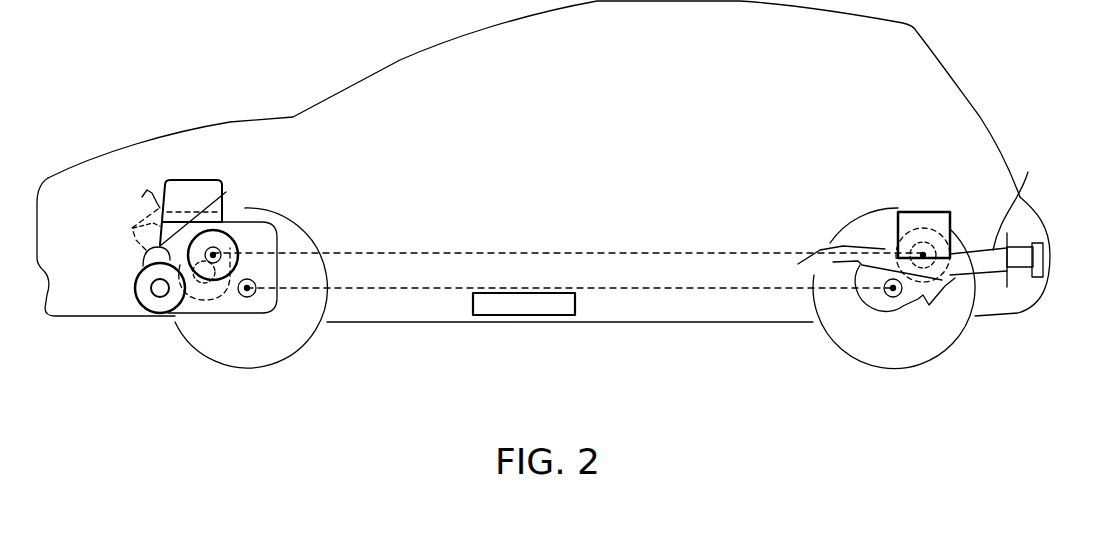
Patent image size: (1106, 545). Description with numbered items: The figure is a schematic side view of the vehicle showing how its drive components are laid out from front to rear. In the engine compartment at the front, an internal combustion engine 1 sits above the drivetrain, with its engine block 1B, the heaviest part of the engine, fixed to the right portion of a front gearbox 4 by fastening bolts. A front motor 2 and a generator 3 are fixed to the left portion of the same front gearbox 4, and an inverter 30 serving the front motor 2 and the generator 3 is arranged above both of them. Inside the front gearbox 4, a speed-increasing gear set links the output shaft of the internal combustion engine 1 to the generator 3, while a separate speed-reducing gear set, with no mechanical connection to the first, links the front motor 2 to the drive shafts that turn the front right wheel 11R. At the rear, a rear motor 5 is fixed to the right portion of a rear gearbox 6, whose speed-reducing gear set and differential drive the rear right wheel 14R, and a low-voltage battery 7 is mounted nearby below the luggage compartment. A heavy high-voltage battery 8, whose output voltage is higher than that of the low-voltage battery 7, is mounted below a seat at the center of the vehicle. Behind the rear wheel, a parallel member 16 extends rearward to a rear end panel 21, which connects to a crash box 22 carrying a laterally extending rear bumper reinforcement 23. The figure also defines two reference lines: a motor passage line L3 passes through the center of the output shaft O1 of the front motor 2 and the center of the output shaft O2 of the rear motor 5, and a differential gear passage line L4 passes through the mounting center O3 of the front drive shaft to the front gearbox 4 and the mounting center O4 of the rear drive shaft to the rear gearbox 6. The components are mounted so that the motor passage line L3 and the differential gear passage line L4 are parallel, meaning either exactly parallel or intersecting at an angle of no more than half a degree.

The internal combustion engine 1 is at (165, 207).
The engine block 1B is at (142, 228).
The front motor 2 is at (237, 245).
The generator 3 is at (157, 318).
The front gearbox 4 is at (225, 307).
The rear motor 5 is at (965, 282).
The rear gearbox 6 is at (903, 300).
The low-voltage battery 7 is at (937, 212).
The high-voltage battery 8 is at (520, 307).
The front right wheel 11R is at (300, 328).
The rear right wheel 14R is at (843, 327).
The parallel member 16 is at (1017, 200).
The rear end panel 21 is at (1008, 283).
The crash box 22 is at (1015, 257).
The rear bumper reinforcement 23 is at (1043, 260).
The inverter 30 is at (142, 198).
The center of the output shaft of the front motor O1 is at (209, 248).
The center of the output shaft of the rear motor O2 is at (919, 245).
The mounting center of the drive shaft to the front gearbox O3 is at (249, 298).
The mounting center of the drive shaft to the rear gearbox O4 is at (891, 299).
The motor passage line L3 is at (525, 253).
The differential gear passage line L4 is at (530, 288).